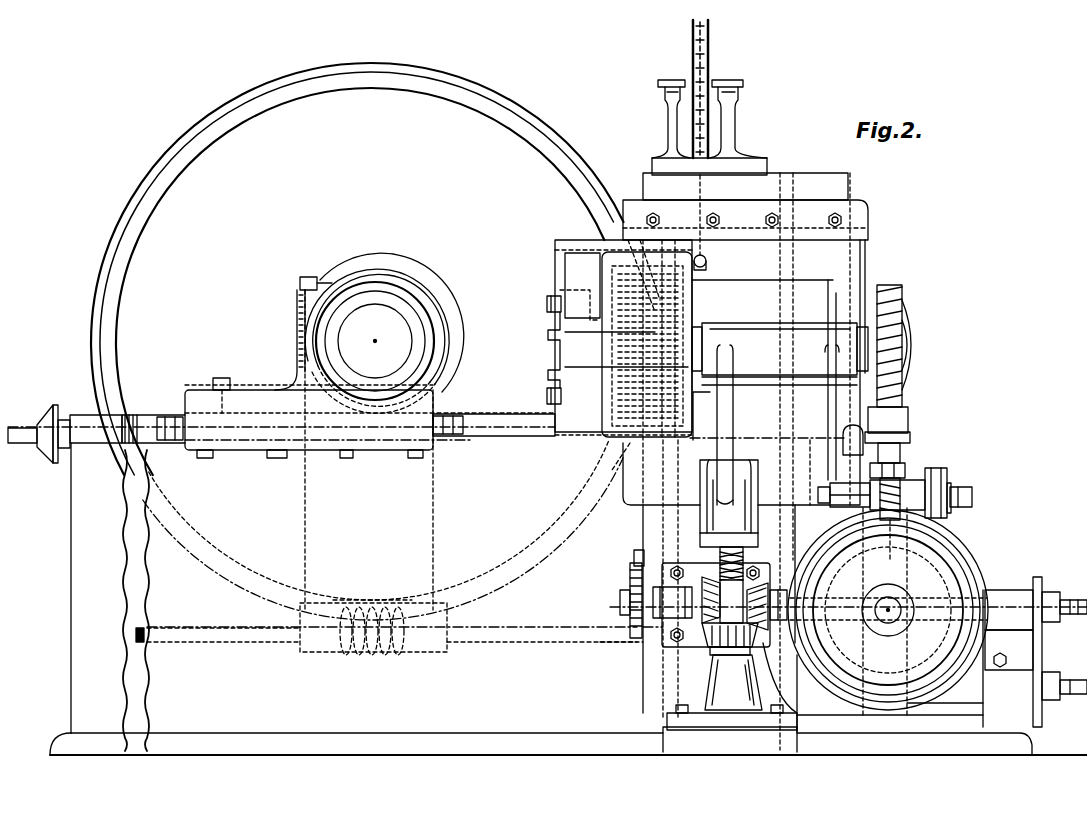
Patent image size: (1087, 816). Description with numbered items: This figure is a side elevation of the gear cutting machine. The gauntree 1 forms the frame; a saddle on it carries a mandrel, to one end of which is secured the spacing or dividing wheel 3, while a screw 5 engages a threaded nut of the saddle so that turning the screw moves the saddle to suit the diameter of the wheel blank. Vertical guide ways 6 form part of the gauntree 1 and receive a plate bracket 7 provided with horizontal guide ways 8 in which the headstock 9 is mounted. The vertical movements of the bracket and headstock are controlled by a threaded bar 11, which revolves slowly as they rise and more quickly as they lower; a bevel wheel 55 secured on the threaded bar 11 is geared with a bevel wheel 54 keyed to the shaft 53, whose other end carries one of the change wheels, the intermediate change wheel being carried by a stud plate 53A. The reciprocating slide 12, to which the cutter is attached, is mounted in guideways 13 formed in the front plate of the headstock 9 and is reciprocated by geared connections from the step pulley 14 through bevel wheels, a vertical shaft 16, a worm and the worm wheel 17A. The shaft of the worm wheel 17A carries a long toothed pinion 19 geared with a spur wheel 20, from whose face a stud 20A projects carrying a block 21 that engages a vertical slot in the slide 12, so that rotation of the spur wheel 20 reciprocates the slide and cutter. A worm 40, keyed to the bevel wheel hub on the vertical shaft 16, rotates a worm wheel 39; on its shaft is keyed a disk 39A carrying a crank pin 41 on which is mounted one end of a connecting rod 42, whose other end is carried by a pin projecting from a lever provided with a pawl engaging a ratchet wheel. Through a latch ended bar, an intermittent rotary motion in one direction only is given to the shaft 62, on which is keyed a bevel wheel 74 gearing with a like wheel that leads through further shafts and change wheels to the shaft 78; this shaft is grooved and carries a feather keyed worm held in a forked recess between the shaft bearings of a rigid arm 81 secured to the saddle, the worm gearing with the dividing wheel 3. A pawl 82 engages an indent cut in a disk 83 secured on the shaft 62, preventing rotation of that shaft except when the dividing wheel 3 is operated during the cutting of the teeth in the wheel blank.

The gauntree 1 is at (568, 597).
The spacing or dividing wheel 3 is at (375, 269).
The screw 5 is at (42, 432).
The vertical guide ways 6 is at (655, 184).
The plate bracket 7 is at (769, 446).
The horizontal guide ways 8 is at (858, 232).
The headstock 9 is at (588, 244).
The threaded bar 11 is at (745, 555).
The reciprocating slide 12 is at (548, 352).
The guideways 13 is at (547, 303).
The step pulley 14 is at (965, 558).
The vertical shaft 16 is at (904, 445).
The worm wheel 17A is at (904, 297).
The long toothed pinion 19 is at (700, 323).
The spur wheel 20 is at (655, 298).
The stud 20A is at (560, 282).
The block 21 is at (600, 288).
The worm wheel 39 is at (885, 522).
The disk 39A is at (947, 482).
The worm 40 is at (906, 472).
The crank pin 41 is at (972, 497).
The connecting rod 42 is at (952, 512).
The shaft 53 is at (1052, 600).
The stud plate 53A is at (1040, 655).
The bevel wheel 54 is at (800, 600).
The bevel wheel 55 is at (716, 650).
The shaft 62 is at (620, 600).
The bevel wheel 74 is at (705, 585).
The shaft 78 is at (238, 626).
The rigid arm 81 is at (433, 525).
The pawl 82 is at (634, 564).
The disk 83 is at (640, 645).